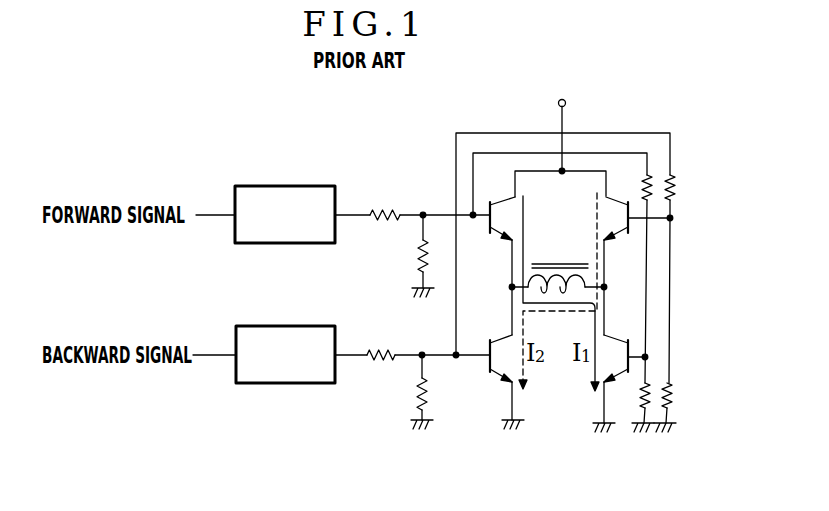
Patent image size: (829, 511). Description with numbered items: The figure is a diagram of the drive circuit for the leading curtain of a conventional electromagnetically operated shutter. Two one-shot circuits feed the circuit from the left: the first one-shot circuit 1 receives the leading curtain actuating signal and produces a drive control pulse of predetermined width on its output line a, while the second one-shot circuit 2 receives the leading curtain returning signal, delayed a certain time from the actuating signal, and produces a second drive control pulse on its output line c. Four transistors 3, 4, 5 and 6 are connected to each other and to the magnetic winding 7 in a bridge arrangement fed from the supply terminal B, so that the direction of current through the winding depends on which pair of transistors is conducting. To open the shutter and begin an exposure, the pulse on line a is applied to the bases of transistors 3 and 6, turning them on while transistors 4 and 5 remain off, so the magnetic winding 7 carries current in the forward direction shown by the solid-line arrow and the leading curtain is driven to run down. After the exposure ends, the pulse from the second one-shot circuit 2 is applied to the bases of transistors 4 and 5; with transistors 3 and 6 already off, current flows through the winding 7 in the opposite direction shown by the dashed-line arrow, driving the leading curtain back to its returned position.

The first one-shot circuit 1 is at (285, 214).
The second one-shot circuit 2 is at (285, 354).
The transistor 3 is at (497, 233).
The transistor 4 is at (500, 375).
The transistor 5 is at (624, 233).
The transistor 6 is at (624, 372).
The magnetic winding 7 is at (555, 261).
The output line a is at (352, 204).
The backward signal terminal c is at (351, 344).
The power supply terminal + B is at (565, 96).